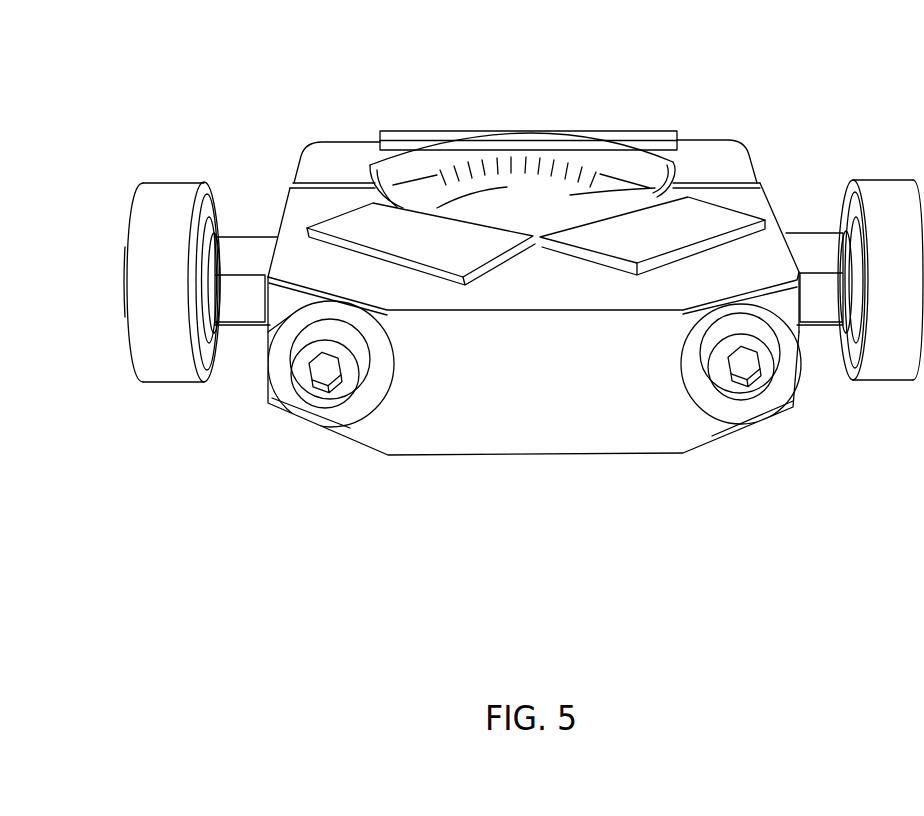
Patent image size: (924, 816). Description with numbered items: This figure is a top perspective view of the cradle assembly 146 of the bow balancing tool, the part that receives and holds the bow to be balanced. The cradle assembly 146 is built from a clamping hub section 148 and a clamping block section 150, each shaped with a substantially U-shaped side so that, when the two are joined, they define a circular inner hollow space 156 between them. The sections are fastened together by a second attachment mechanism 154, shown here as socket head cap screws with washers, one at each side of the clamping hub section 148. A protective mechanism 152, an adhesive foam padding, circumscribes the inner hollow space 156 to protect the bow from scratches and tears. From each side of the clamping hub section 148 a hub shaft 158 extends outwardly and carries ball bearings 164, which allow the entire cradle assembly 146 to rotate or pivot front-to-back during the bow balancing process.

The cradle assembly 146 is at (422, 80).
The clamping hub section 148 is at (512, 442).
The clamping block section 150 is at (693, 148).
The protective mechanism 152 is at (722, 220).
The second attachment mechanism 154 is at (322, 367).
The inner hollow space 156 is at (533, 218).
The hub shaft 158 is at (258, 240).
The ball bearings 164 is at (148, 233).